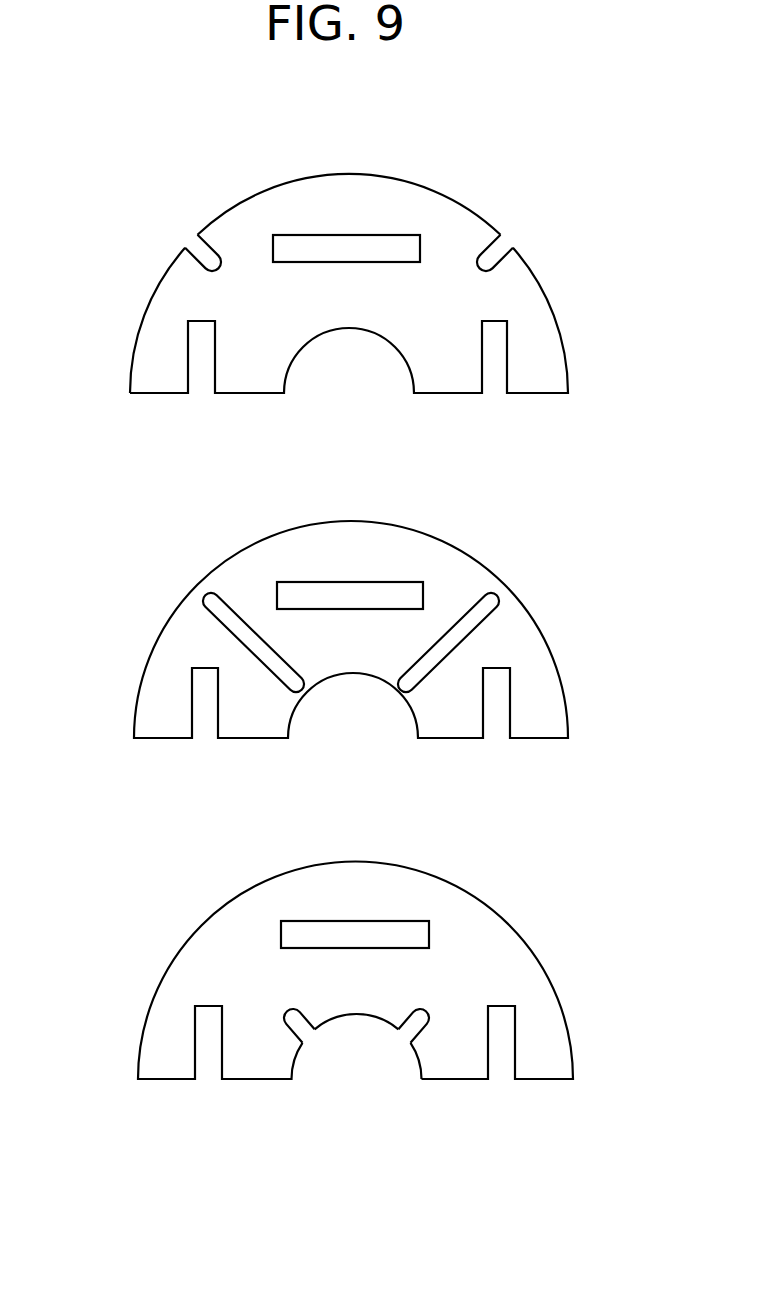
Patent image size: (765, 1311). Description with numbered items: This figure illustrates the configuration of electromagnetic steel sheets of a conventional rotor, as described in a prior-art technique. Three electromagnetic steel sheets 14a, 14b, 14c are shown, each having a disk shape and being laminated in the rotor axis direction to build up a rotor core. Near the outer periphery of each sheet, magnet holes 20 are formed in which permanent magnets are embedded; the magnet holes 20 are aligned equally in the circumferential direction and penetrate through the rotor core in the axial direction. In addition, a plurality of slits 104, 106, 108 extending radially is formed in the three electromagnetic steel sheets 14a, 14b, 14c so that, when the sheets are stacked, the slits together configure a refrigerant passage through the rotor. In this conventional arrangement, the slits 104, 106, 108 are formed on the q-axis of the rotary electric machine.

The electromagnetic steel sheet 14a is at (214, 188).
The electromagnetic steel sheet 14b is at (222, 537).
The electromagnetic steel sheet 14c is at (220, 865).
The magnet hole 20 is at (302, 250).
The slit 104 is at (207, 257).
The slit 106 is at (488, 603).
The slit 108 is at (302, 1030).